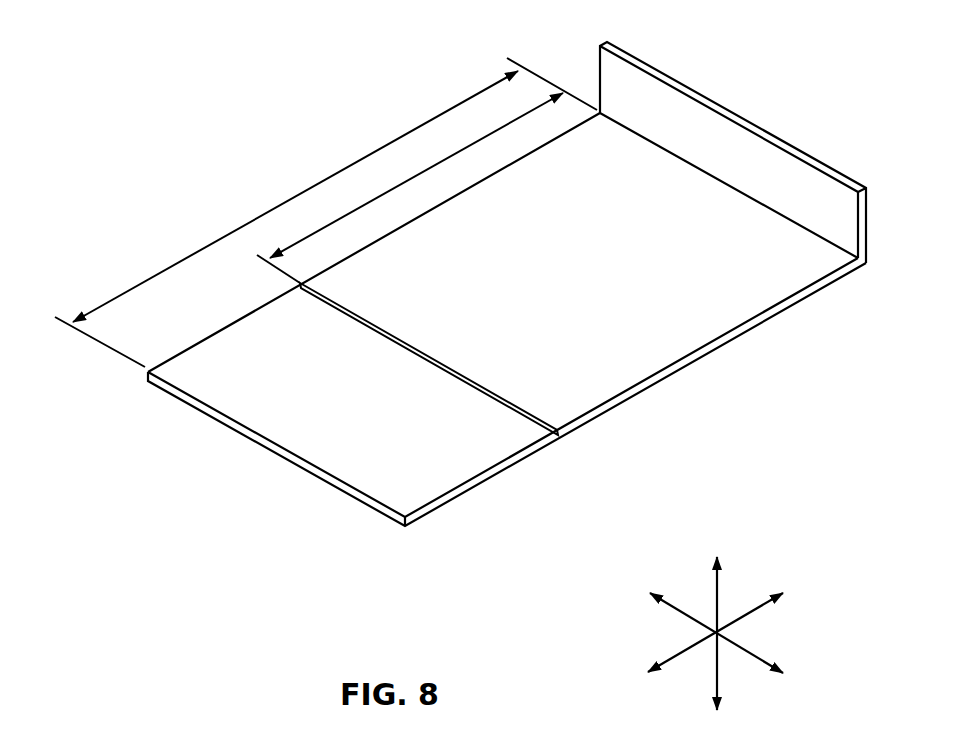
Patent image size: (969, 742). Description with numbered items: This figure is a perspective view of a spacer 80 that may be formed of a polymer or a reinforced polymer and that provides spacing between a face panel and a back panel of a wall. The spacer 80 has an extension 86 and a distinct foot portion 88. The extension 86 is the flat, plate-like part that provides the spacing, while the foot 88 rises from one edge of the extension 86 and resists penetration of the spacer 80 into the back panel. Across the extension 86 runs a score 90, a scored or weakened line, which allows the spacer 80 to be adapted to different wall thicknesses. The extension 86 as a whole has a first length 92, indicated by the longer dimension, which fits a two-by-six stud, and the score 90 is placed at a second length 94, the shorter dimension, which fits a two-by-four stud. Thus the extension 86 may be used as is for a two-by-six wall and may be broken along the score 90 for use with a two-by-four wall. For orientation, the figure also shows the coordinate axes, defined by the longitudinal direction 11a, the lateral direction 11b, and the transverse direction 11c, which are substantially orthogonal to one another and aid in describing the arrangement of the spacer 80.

The spacer 80 is at (507, 317).
The extension 86 is at (718, 315).
The foot portion 88 is at (718, 140).
The score 90 is at (487, 385).
The first length 92 is at (362, 155).
The second length 94 is at (462, 148).
The longitudinal direction 11a is at (717, 577).
The lateral direction 11b is at (758, 610).
The transverse direction 11c is at (755, 655).